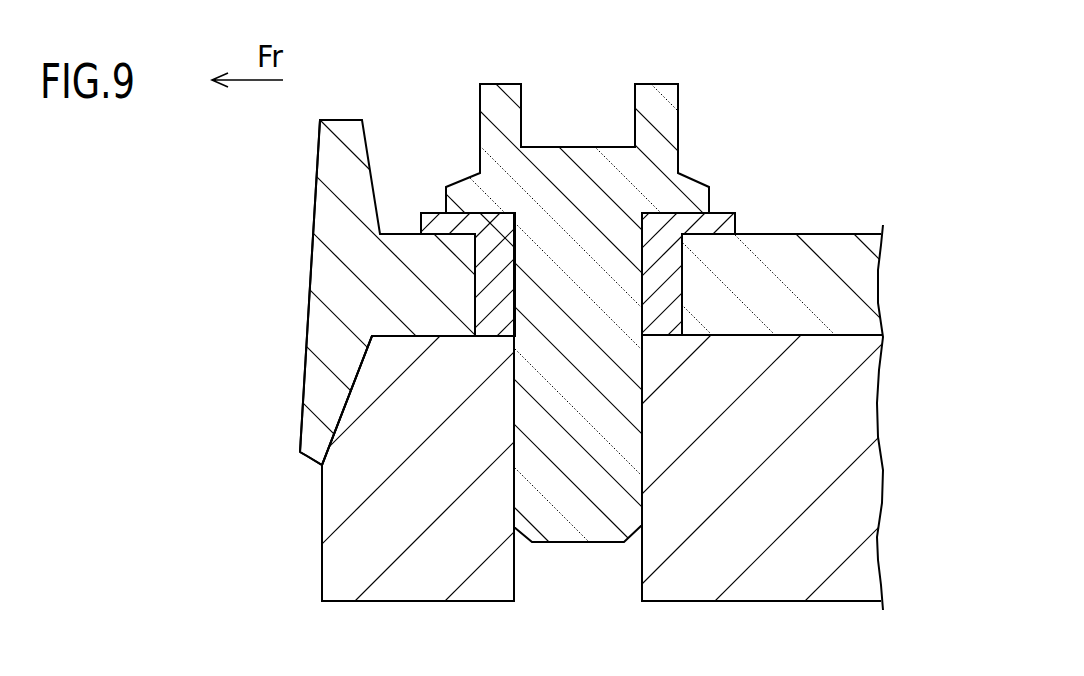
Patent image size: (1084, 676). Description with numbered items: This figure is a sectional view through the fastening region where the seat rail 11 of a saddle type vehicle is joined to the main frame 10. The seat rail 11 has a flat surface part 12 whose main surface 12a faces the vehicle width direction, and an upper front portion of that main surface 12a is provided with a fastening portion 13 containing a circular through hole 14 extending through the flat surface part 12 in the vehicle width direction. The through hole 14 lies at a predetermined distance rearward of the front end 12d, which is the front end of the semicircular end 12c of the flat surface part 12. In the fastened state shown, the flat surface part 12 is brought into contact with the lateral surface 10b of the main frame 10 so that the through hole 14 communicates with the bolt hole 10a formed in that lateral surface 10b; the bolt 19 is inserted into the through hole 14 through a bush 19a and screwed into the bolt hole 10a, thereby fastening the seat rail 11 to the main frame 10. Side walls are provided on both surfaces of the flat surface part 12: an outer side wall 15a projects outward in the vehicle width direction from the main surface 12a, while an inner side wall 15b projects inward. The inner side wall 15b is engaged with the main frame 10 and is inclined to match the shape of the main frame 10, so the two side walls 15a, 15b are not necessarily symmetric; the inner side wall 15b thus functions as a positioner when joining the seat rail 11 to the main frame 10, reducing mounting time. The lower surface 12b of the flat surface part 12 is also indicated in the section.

The main frame 10 is at (838, 520).
The bolt hole 10a is at (514, 482).
The lateral surface 10b is at (812, 335).
The seat rail 11 is at (824, 220).
The flat surface part 12 is at (845, 265).
The main surface 12a is at (853, 235).
The lower surface of cover member 12b is at (767, 335).
The semicircular end 12c is at (243, 286).
The front end 12d is at (310, 280).
The fastening portion 13 is at (430, 189).
The through hole 14 is at (514, 280).
The outer side wall 15a is at (322, 163).
The inner side wall 15b is at (320, 400).
The bolt 19 is at (657, 104).
The bush 19a is at (723, 223).